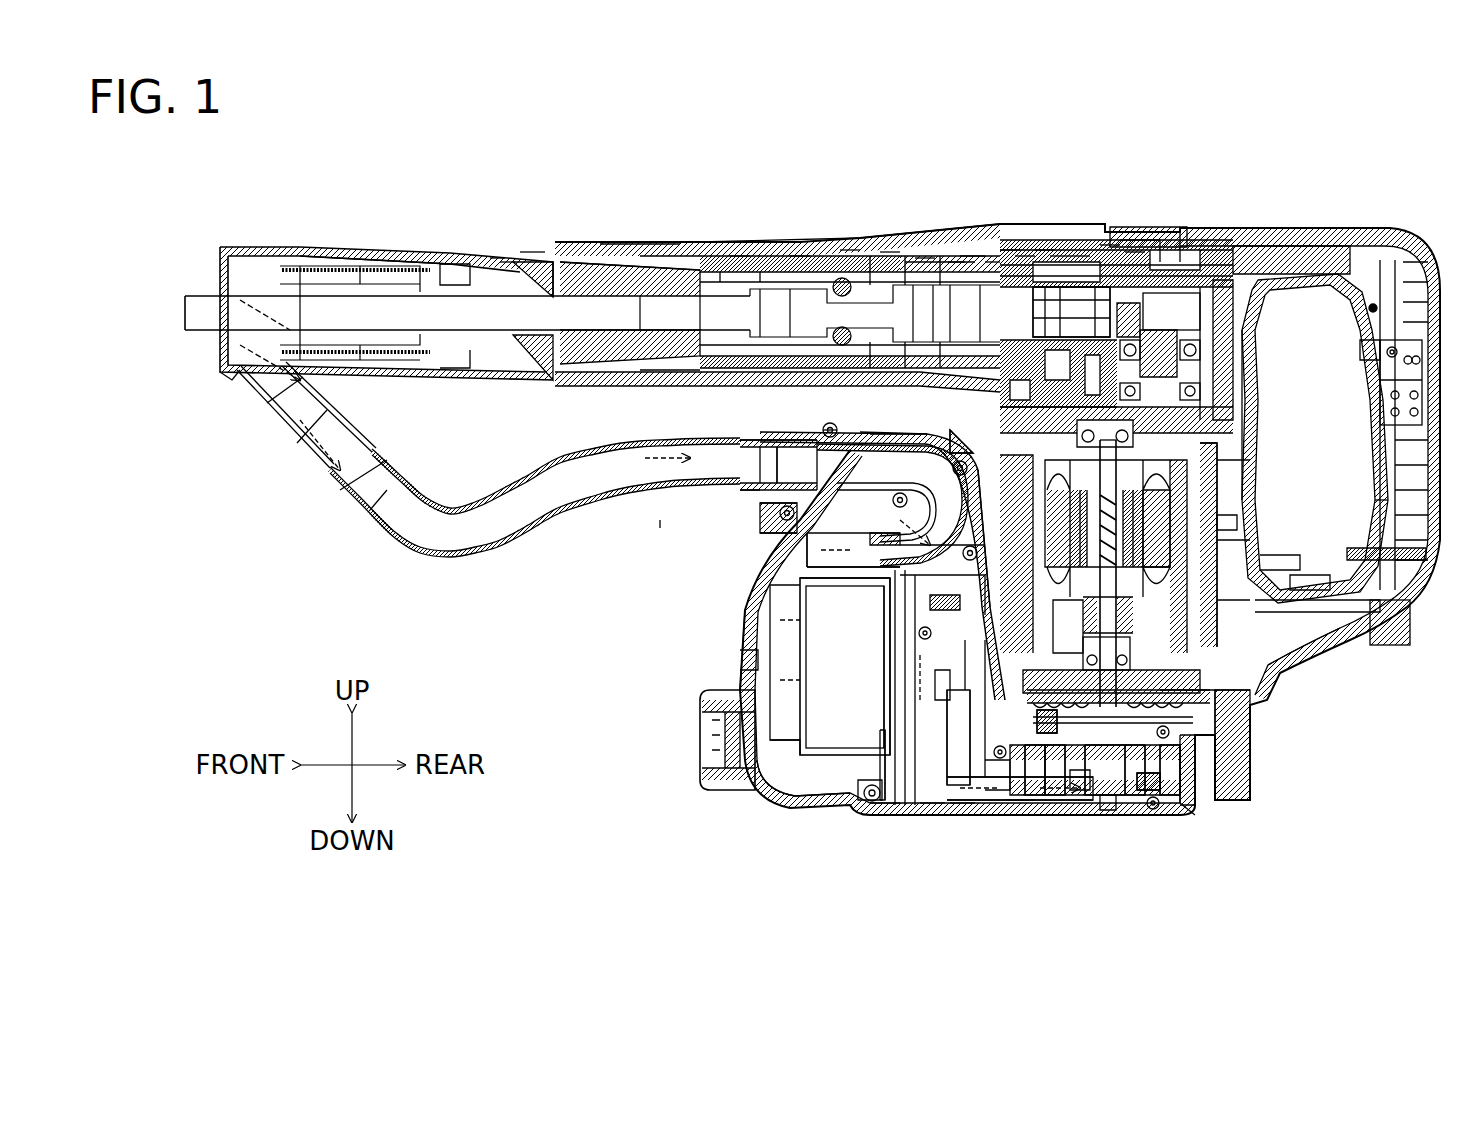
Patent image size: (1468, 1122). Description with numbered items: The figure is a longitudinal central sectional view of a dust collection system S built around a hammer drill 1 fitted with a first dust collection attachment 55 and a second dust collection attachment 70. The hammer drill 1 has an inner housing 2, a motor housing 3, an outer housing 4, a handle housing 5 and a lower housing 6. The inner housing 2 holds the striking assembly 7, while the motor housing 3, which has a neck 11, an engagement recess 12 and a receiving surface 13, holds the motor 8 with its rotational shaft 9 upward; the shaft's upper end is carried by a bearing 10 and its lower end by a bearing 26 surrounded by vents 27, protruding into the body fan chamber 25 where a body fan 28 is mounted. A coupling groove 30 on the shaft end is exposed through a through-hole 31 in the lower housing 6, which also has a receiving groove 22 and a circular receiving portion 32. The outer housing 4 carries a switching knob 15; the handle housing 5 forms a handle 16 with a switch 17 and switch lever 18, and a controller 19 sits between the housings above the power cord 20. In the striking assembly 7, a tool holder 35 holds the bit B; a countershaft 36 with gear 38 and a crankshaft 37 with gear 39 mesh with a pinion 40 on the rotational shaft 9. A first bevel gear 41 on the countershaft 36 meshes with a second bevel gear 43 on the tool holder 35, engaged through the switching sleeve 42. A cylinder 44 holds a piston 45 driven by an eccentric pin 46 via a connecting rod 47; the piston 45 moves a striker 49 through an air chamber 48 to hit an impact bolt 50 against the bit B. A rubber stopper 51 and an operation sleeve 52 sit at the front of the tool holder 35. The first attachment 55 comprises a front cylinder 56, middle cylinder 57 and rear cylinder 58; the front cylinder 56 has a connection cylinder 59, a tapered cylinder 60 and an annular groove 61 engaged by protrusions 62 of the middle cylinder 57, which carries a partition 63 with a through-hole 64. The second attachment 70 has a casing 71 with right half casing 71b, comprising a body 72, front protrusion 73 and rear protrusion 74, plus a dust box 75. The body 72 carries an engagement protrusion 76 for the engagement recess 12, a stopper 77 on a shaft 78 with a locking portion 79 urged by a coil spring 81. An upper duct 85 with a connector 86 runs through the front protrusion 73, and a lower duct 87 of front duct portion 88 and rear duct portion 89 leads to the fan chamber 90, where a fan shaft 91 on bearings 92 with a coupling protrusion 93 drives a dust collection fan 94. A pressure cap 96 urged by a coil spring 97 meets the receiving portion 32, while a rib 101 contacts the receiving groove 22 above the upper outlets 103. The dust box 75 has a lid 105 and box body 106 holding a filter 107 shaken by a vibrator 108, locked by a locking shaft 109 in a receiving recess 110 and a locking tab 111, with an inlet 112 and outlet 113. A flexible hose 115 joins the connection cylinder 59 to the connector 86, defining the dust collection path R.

The hammer drill 1 is at (1213, 225).
The inner housing 2 is at (900, 240).
The motor housing 3 is at (885, 428).
The outer housing 4 is at (822, 242).
The handle housing 5 is at (1262, 408).
The lower housing 6 is at (1245, 722).
The striking assembly 7 is at (938, 243).
The motor 8 is at (1172, 500).
The rotational shaft 9 is at (1130, 472).
The bearing 10 is at (1220, 445).
The neck 11 is at (990, 540).
The engagement recess 12 is at (905, 432).
The receiving surface 13 is at (980, 770).
The switching knob 15 is at (1150, 228).
The handle 16 is at (1376, 500).
The switch 17 is at (1395, 405).
The switch lever 18 is at (1360, 350).
The controller 19 is at (1238, 522).
The power cord 20 is at (1258, 706).
The receiving groove 22 is at (990, 792).
The body fan chamber 25 is at (1285, 678).
The bearing 26 is at (1282, 558).
The vents 27 is at (1305, 575).
The body fan 28 is at (1228, 742).
The coupling groove 30 is at (1205, 748).
The through-hole 31 is at (1172, 800).
The receiving portion 32 is at (1030, 762).
The tool holder 35 is at (848, 250).
The countershaft 36 is at (1005, 248).
The crankshaft 37 is at (1187, 240).
The gear 38 is at (955, 262).
The gear 39 is at (1260, 382).
The pinion 40 is at (1107, 245).
The first bevel gear 41 is at (1060, 255).
The switching sleeve 42 is at (922, 258).
The second bevel gear 43 is at (1025, 255).
The cylinder 44 is at (970, 255).
The piston 45 is at (1042, 248).
The eccentric pin 46 is at (1132, 250).
The connecting rod 47 is at (1080, 255).
The air chamber 48 is at (992, 260).
The striker 49 is at (890, 250).
The impact bolt 50 is at (797, 255).
The rubber stopper 51 is at (590, 265).
The operation sleeve 52 is at (740, 250).
The first dust collection attachment 55 is at (455, 252).
The front cylinder 56 is at (352, 258).
The middle cylinder 57 is at (533, 250).
The rear cylinder 58 is at (698, 242).
The connection cylinder 59 is at (272, 430).
The tapered cylinder 60 is at (455, 368).
The annular groove 61 is at (498, 256).
The protrusions 62 is at (508, 258).
The partition 63 is at (548, 262).
The through-hole 64 is at (545, 382).
The second dust collection attachment 70 is at (735, 442).
The casing 71 is at (748, 440).
The right half casing 71b is at (777, 440).
The body 72 is at (947, 790).
The front protrusion 73 is at (760, 530).
The rear protrusion 74 is at (1172, 792).
The dust box 75 is at (737, 630).
The engagement protrusion 76 is at (950, 445).
The stopper 77 is at (886, 620).
The shaft 78 is at (888, 598).
The locking portion 79 is at (960, 800).
The coil spring 81 is at (888, 642).
The upper duct 85 is at (830, 423).
The connector 86 is at (760, 505).
The lower duct 87 is at (802, 806).
The front duct portion 88 is at (930, 806).
The rear duct portion 89 is at (965, 806).
The fan chamber 90 is at (1192, 762).
The fan shaft 91 is at (1106, 810).
The bearings 92 is at (1095, 797).
The coupling protrusion 93 is at (1135, 790).
The dust collection fan 94 is at (1192, 795).
The pressure cap 96 is at (1058, 792).
The coil spring 97 is at (1045, 757).
The rib 101 is at (1010, 792).
The upper outlets 103 is at (1198, 800).
The lid 105 is at (886, 797).
The box body 106 is at (740, 660).
The filter 107 is at (772, 796).
The vibrator 108 is at (700, 752).
The locking shaft 109 is at (876, 806).
The receiving recess 110 is at (862, 802).
The locking tab 111 is at (805, 550).
The inlet 112 is at (805, 568).
The outlet 113 is at (792, 792).
The flexible hose 115 is at (547, 510).
The bit B is at (262, 300).
The dust collection system S is at (626, 167).
The dust collection path R is at (660, 539).